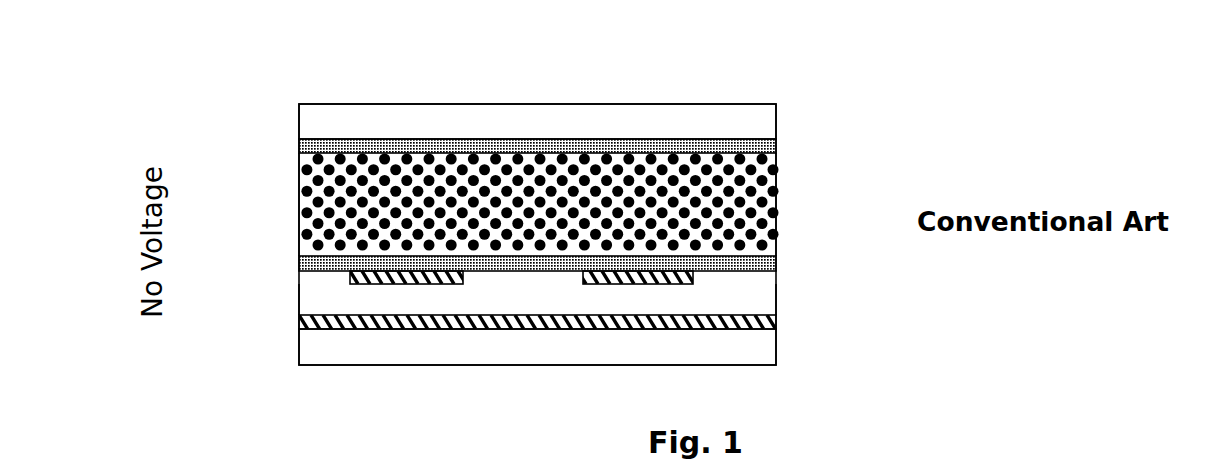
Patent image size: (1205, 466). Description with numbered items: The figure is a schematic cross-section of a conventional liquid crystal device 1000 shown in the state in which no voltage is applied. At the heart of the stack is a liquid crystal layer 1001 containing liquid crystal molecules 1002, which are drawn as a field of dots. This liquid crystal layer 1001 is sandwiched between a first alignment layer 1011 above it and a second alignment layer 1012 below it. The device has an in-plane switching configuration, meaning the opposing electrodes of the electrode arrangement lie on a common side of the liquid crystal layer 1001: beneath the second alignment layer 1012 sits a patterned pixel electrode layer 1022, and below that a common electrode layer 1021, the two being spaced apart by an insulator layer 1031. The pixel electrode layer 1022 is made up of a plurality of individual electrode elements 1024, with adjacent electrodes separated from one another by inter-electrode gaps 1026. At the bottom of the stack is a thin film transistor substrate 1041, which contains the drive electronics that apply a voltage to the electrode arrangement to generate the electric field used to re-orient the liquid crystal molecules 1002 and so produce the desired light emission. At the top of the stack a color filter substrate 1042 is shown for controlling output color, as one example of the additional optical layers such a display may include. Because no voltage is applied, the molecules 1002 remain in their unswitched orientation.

The liquid crystal device 1000 is at (273, 107).
The liquid crystal molecules 1002 is at (665, 165).
The color filter substrate 1042 is at (776, 104).
The first alignment layer 1011 is at (776, 139).
The liquid crystal layer 1001 is at (576, 141).
The second alignment layer 1012 is at (776, 256).
The pixel electrode layer 1022 is at (568, 350).
The individual electrode elements 1024 is at (405, 284).
The inter-electrode gaps 1026 is at (528, 282).
The insulator layer 1031 is at (576, 357).
The common electrode layer 1021 is at (776, 315).
The thin film transistor substrate 1041 is at (776, 329).